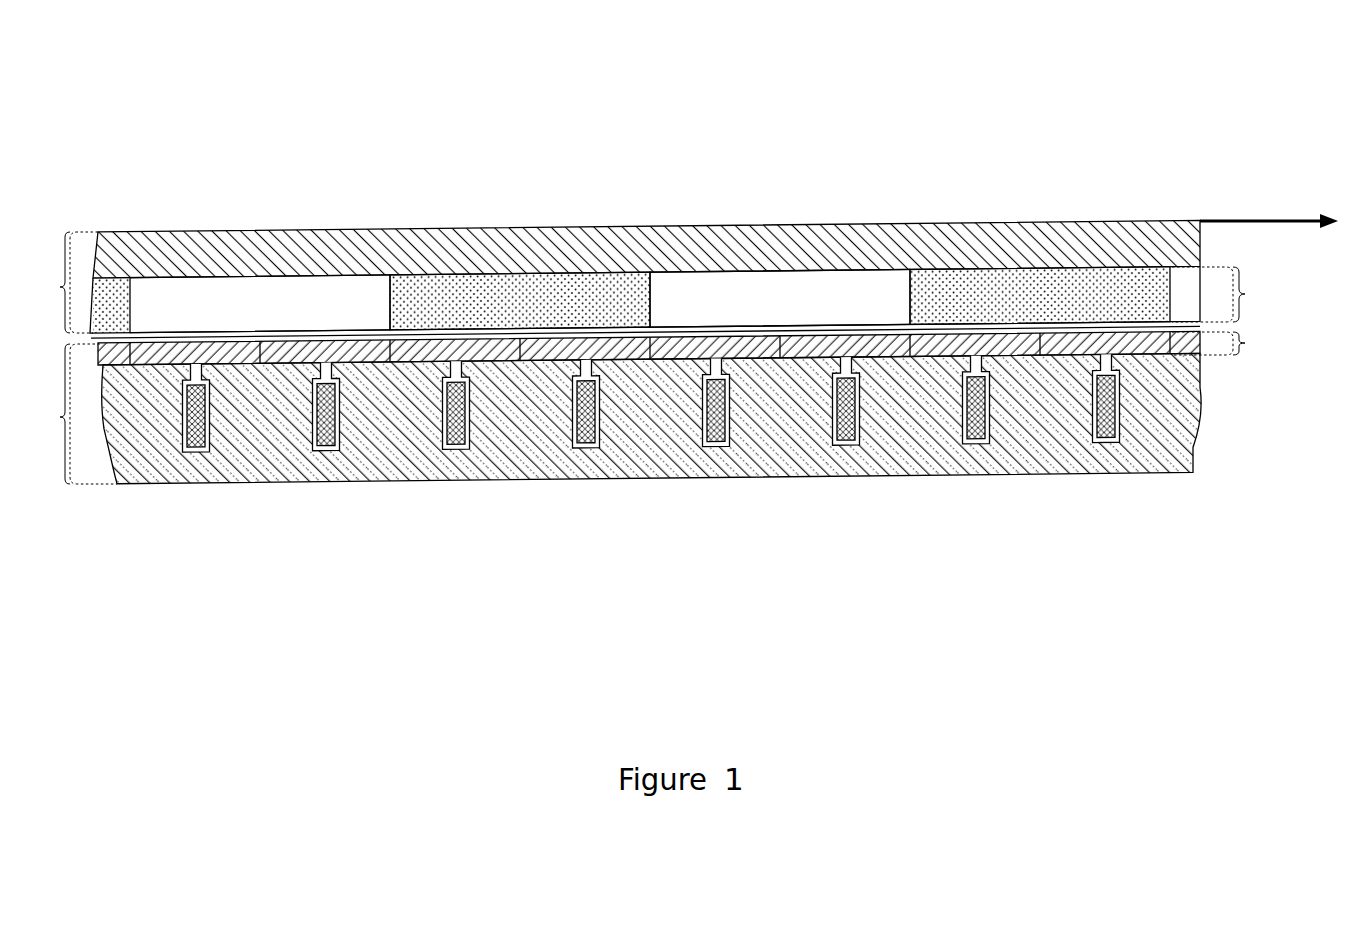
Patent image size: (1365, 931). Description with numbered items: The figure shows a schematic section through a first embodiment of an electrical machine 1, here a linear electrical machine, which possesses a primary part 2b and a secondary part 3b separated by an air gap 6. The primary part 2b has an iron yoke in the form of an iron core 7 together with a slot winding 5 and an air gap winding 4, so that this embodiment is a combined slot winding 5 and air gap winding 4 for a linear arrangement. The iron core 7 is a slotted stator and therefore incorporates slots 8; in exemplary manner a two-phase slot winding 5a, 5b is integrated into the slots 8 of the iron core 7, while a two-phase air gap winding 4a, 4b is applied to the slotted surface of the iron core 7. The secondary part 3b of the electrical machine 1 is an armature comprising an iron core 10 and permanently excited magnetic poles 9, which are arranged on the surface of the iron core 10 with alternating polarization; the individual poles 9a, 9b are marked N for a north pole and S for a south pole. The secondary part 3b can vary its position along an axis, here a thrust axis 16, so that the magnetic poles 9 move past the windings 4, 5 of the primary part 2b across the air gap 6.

The electrical machine 1 is at (162, 130).
The primary part 2b is at (69, 414).
The secondary part 3b is at (60, 282).
The air gap winding 4 is at (678, 256).
The first phase of the air gap winding 4a is at (198, 357).
The second phase of the air gap winding 4b is at (330, 357).
The slot winding 5 is at (192, 485).
The first phase of the slot winding 5a is at (460, 447).
The second phase of the slot winding 5b is at (330, 449).
The air gap 6 is at (1150, 327).
The iron core 7 is at (1165, 393).
The slots 8 is at (188, 414).
The permanently excited magnetic poles 9 is at (675, 231).
The first permanently excited magnetic pole 9a is at (303, 302).
The second permanently excited magnetic pole 9b is at (448, 302).
The iron core 10 is at (1160, 247).
The thrust axis 16 is at (1281, 222).